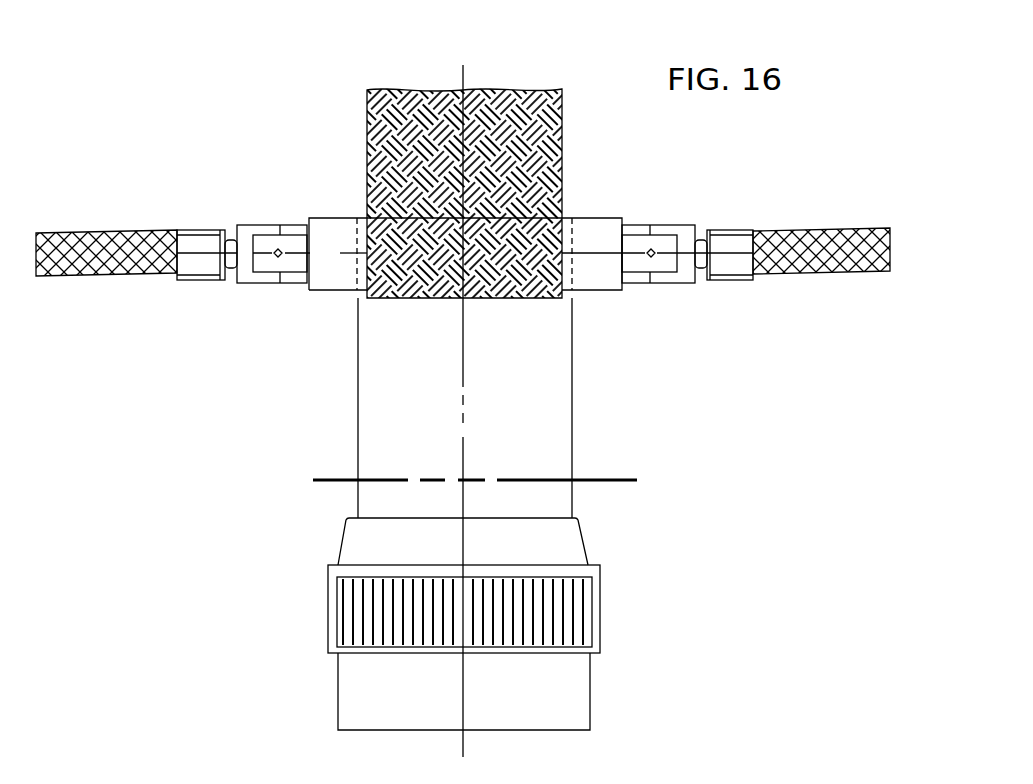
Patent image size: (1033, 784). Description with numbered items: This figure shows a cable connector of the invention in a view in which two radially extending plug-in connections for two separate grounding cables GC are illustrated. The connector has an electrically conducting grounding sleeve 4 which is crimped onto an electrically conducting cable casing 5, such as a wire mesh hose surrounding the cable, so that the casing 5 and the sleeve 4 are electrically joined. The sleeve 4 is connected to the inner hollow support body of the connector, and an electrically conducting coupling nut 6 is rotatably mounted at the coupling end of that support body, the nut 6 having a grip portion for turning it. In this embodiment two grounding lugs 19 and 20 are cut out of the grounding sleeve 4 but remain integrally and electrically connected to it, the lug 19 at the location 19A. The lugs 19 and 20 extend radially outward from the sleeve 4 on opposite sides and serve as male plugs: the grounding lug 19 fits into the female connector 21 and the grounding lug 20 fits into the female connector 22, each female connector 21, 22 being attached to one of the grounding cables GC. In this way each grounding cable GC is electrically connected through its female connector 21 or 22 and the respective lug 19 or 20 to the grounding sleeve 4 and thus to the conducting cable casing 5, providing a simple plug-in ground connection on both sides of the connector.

The grounding sleeve 4 is at (358, 427).
The cable casing 5 is at (367, 118).
The coupling nut 6 is at (583, 523).
The grounding lug 19 is at (263, 232).
The integral connection of grounding lug 19A is at (366, 218).
The grounding lug 20 is at (640, 232).
The female connector 21 is at (281, 283).
The female connector 22 is at (650, 283).
The grounding cable GC is at (92, 274).